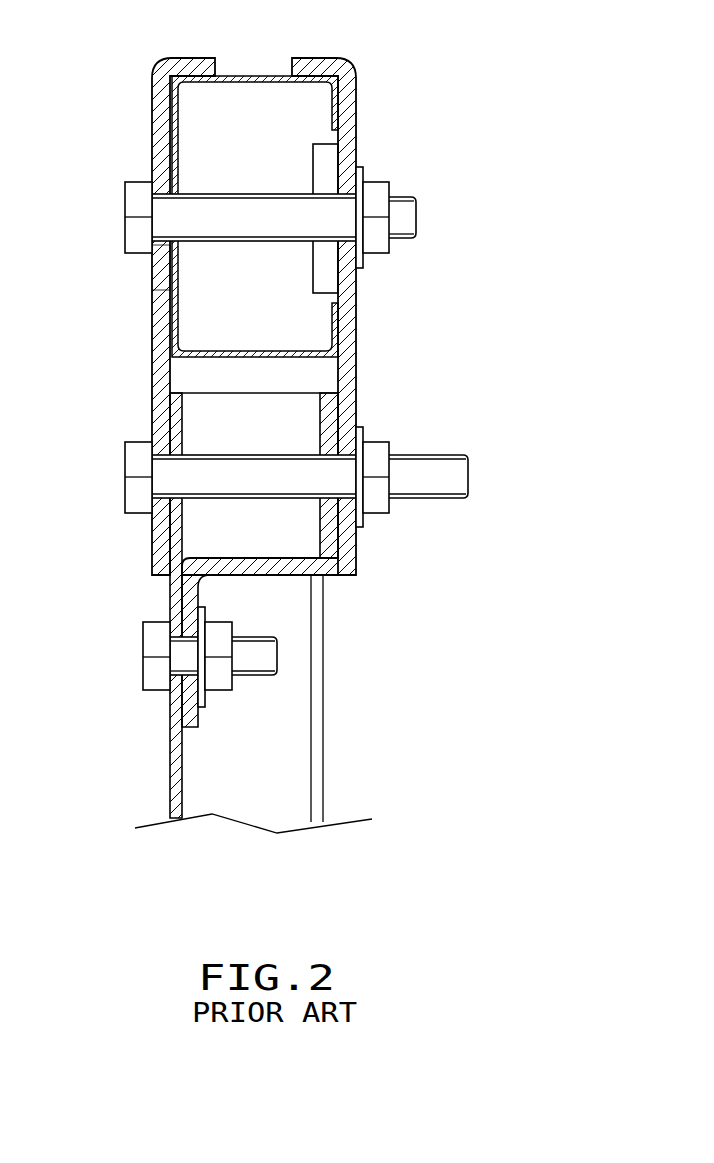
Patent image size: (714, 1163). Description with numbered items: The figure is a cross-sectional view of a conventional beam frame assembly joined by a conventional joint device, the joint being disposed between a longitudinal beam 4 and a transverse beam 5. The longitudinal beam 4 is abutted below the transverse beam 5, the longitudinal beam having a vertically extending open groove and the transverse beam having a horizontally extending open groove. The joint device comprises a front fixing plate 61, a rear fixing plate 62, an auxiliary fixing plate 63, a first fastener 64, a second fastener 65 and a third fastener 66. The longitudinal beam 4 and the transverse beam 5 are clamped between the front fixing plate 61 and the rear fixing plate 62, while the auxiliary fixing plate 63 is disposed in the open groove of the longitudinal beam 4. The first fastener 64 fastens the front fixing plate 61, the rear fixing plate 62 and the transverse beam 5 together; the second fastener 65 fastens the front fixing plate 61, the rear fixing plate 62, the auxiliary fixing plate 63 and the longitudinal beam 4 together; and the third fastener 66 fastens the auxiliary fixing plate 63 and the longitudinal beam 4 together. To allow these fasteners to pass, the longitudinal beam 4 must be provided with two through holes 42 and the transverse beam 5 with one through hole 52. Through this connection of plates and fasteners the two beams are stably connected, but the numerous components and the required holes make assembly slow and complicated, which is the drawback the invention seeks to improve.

The longitudinal beam 4 is at (313, 685).
The through holes 42 is at (178, 512).
The transverse beam 5 is at (246, 72).
The through hole 52 is at (160, 262).
The front fixing plate 61 is at (345, 140).
The rear fixing plate 62 is at (157, 130).
The auxiliary fixing plate 63 is at (322, 575).
The first fastener 64 is at (133, 202).
The second fastener 65 is at (135, 455).
The third fastener 66 is at (157, 642).